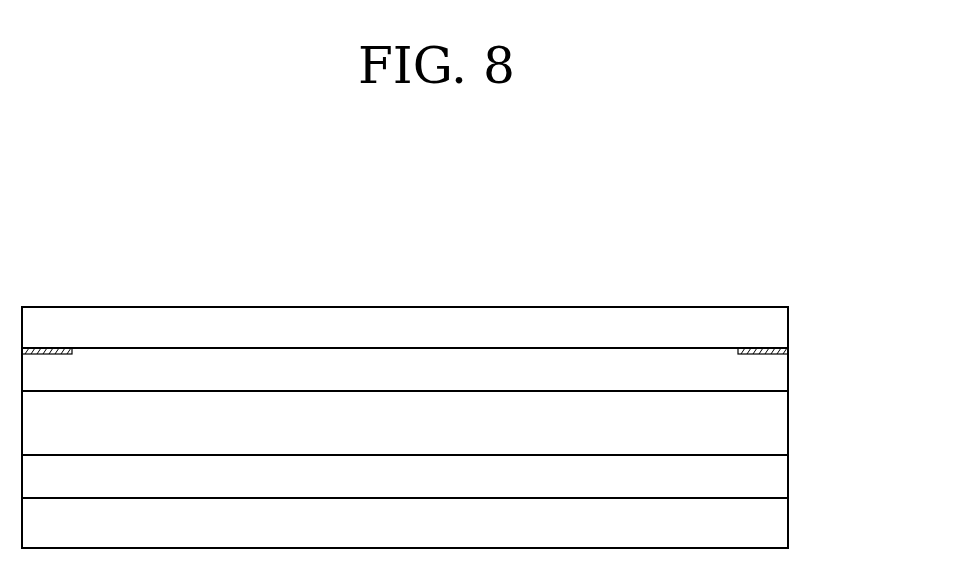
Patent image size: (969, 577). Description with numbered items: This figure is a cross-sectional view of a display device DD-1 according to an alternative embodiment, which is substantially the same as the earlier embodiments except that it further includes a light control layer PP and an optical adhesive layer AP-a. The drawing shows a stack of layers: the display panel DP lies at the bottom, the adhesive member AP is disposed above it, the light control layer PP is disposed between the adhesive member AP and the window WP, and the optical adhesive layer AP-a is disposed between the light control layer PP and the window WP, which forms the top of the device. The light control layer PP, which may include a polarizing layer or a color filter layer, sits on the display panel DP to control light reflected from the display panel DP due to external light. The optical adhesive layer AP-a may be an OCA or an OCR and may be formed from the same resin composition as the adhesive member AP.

The display device DD-1 is at (770, 269).
The window WP is at (789, 327).
The optical adhesive layer AP-a is at (778, 372).
The light control layer PP is at (778, 424).
The adhesive member AP is at (778, 478).
The display panel DP is at (778, 523).